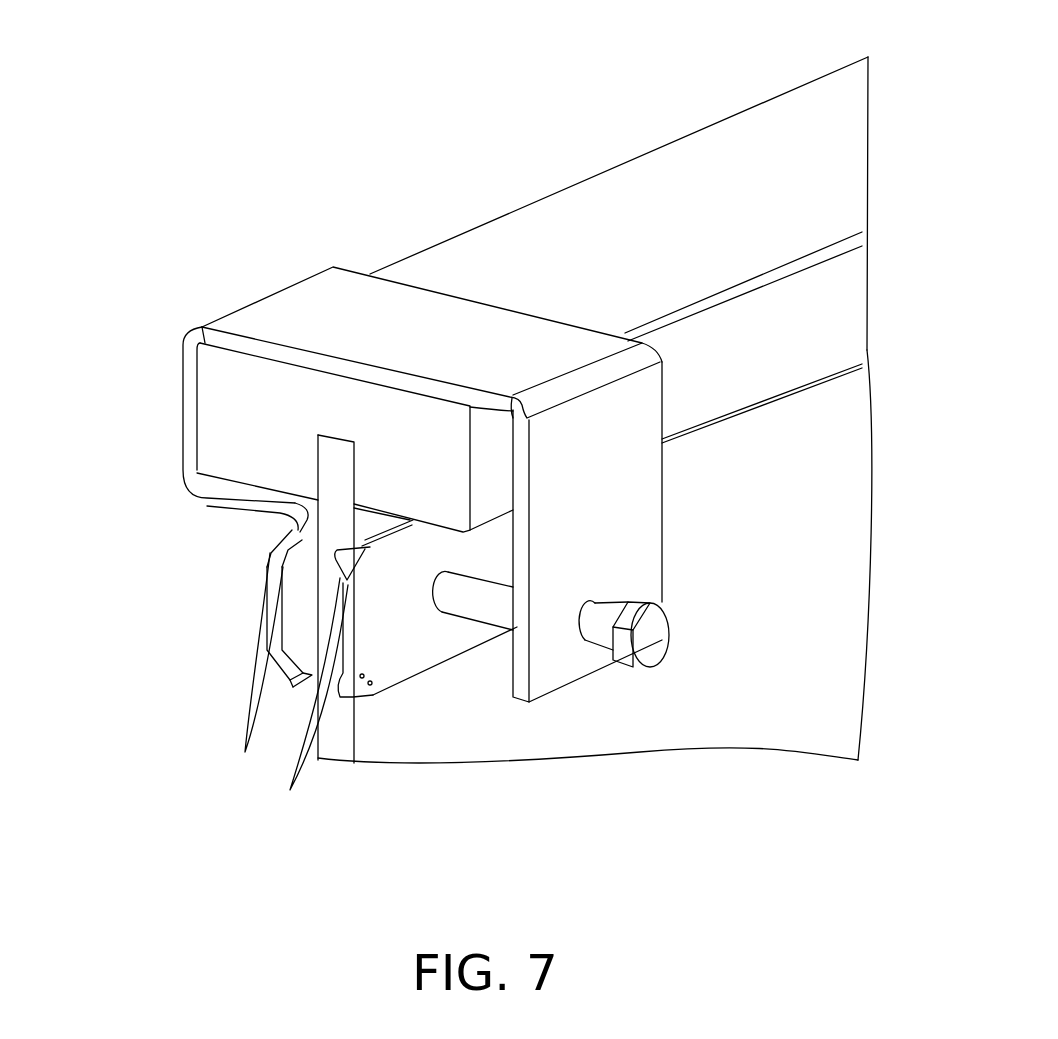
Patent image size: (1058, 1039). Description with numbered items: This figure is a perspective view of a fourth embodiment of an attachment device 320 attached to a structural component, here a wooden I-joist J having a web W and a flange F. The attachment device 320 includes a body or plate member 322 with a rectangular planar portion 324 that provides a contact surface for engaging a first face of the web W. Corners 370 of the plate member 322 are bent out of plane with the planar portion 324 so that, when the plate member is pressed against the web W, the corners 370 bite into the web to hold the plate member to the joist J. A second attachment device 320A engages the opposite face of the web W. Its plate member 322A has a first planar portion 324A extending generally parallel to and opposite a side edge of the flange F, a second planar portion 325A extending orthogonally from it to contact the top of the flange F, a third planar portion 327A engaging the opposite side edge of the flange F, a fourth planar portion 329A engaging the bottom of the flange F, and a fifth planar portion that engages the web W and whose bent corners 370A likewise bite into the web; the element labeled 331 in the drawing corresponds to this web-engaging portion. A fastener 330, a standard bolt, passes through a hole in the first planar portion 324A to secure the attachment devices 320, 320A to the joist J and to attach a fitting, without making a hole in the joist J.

The joist J is at (745, 103).
The flange F is at (817, 138).
The web W is at (852, 451).
The second attachment device 320A is at (367, 368).
The plate member 322A is at (318, 260).
The second planar portion 325A is at (395, 315).
The third planar portion 327A is at (182, 428).
The fourth planar portion 329A is at (243, 503).
The spring clip 331 is at (267, 597).
The corners 370A is at (252, 737).
The corners 370 is at (288, 788).
The attachment device 320 is at (660, 592).
The planar portion 324 is at (408, 633).
The first planar portion 324A is at (627, 525).
The fastener 330 is at (642, 643).
The plate member 322 is at (472, 657).